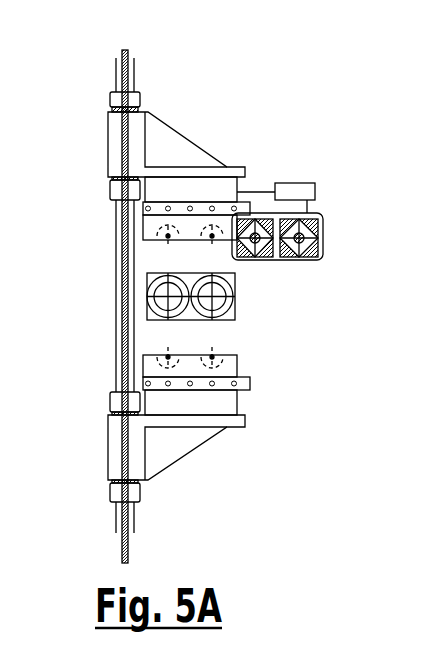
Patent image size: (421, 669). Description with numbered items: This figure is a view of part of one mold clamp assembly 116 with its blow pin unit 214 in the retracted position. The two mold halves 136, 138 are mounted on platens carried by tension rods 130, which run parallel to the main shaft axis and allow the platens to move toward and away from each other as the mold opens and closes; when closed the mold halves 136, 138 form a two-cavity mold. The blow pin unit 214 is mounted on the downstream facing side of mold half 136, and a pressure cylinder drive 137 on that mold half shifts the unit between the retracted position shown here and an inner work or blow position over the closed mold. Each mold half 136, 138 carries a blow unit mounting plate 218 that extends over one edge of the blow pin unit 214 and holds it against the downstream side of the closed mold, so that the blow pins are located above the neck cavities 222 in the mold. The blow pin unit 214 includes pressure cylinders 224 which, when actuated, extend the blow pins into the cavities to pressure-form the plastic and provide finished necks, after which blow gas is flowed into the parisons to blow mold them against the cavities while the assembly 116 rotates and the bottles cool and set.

The mold clamp assembly 116 is at (234, 77).
The tension rods 130 is at (116, 221).
The mold half 136 is at (146, 222).
The pressure cylinder drive 137 is at (316, 192).
The mold half 138 is at (240, 360).
The blow pin unit 214 is at (324, 249).
The blow unit mounting plate 218 is at (243, 210).
The neck cavities 222 is at (211, 240).
The pressure cylinders 224 is at (272, 255).